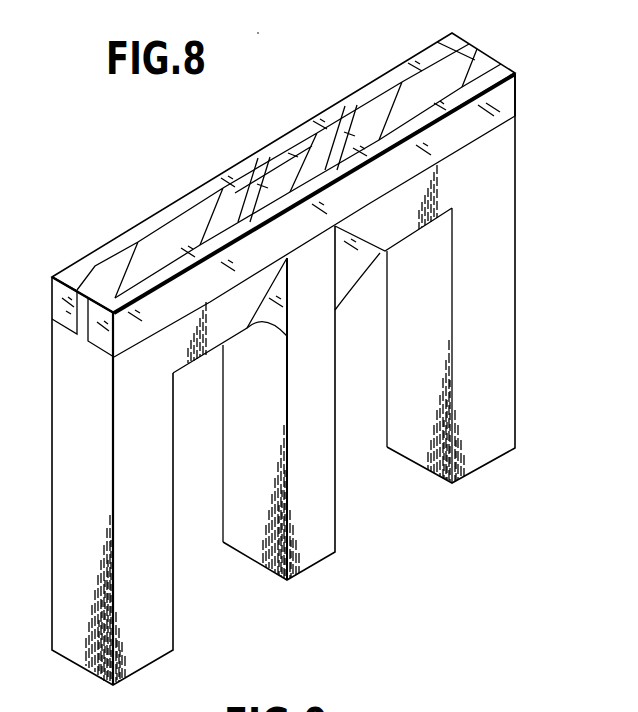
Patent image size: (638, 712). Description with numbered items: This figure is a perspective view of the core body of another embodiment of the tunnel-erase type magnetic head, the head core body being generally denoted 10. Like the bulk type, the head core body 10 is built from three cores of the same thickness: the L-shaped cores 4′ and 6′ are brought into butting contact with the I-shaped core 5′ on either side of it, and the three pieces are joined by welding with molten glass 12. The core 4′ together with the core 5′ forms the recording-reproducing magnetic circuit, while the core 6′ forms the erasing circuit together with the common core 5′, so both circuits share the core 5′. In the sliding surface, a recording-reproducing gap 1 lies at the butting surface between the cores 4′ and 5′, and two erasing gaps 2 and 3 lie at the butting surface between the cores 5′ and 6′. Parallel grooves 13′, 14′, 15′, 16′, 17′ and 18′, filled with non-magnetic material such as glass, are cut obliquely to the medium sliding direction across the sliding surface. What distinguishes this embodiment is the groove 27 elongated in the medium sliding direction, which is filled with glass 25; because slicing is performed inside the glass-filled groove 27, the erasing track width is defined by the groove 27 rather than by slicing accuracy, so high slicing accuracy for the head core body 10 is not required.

The head core body 10 is at (124, 201).
The groove 13′ is at (75, 280).
The groove 14′ is at (150, 242).
The groove 15′ is at (240, 194).
The groove 16′ is at (338, 125).
The groove 17′ is at (405, 92).
The groove 18′ is at (475, 62).
The recording-reproducing gap 1 is at (266, 176).
The erasing gap 2 is at (294, 132).
The erasing gap 3 is at (322, 167).
The glass 25 is at (520, 110).
The groove for defining the erasing track 27 is at (197, 185).
The molten glass 12 is at (265, 320).
The core 4′ is at (157, 651).
The core 5′ is at (316, 558).
The core 6′ is at (488, 455).